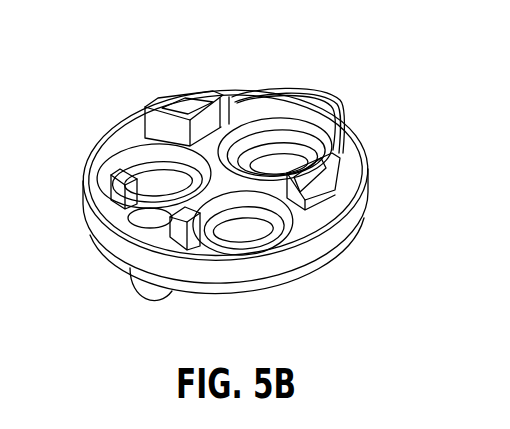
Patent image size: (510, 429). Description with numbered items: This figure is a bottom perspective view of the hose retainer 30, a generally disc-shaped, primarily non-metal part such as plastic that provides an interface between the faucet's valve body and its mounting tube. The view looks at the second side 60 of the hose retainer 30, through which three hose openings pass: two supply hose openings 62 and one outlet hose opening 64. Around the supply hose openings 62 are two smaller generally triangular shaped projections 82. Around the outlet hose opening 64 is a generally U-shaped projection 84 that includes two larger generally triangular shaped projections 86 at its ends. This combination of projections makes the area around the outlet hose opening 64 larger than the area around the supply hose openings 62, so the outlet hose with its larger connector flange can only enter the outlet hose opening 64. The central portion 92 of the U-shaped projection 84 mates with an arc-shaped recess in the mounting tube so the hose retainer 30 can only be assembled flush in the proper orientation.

The hose retainer 30 is at (88, 99).
The generally U-shaped projection 84 is at (241, 78).
The larger generally triangular shaped projections 86 is at (183, 106).
The central portion 92 is at (294, 88).
The outlet hose opening 64 is at (271, 147).
The second side 60 is at (226, 183).
The supply hose openings 62 is at (242, 237).
The smaller generally triangular shaped projections 82 is at (180, 232).